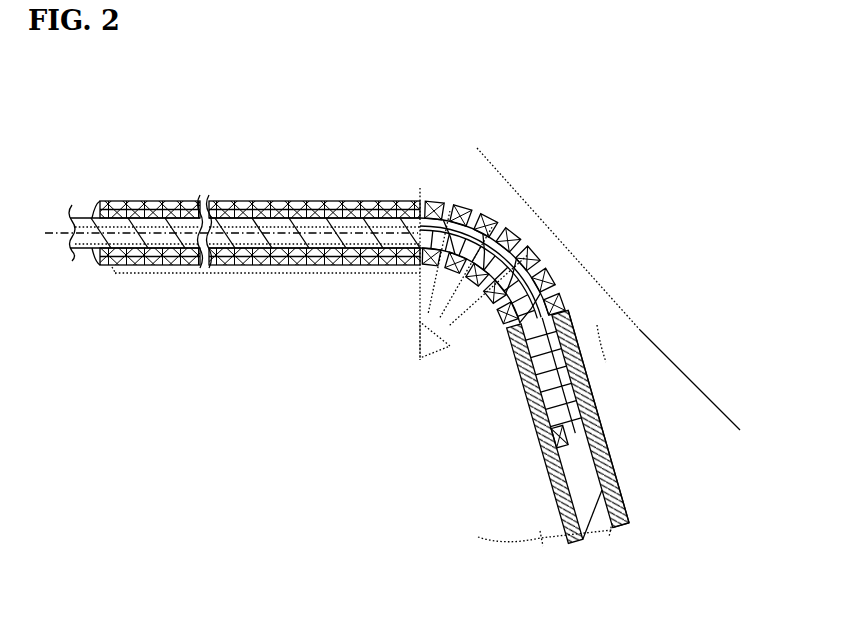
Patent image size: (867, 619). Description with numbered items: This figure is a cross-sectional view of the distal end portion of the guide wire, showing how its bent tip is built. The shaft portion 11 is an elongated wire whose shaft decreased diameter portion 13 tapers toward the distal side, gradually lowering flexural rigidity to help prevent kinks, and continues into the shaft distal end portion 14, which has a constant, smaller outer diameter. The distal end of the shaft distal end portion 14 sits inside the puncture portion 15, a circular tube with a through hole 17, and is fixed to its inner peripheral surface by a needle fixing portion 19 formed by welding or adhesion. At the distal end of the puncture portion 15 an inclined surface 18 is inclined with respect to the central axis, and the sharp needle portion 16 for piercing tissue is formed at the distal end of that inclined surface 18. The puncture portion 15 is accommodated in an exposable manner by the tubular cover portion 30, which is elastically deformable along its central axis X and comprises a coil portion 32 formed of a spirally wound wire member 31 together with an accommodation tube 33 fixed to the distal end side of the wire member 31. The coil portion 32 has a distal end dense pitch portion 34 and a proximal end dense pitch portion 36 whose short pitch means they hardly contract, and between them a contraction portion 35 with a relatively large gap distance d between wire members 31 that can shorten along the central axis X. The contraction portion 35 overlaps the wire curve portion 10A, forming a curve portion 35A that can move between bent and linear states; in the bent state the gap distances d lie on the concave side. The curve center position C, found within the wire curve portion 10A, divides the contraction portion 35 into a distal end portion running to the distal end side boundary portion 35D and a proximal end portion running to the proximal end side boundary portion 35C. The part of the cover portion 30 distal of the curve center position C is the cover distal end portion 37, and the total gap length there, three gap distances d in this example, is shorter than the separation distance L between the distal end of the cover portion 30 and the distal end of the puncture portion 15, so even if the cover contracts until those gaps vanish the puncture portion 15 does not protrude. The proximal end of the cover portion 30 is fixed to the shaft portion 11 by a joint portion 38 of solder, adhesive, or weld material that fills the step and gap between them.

The wire curve portion 10A is at (473, 205).
The shaft portion 11 is at (175, 212).
The shaft decreased diameter portion 13 is at (315, 218).
The shaft distal end portion 14 is at (592, 380).
The puncture portion 15 is at (551, 474).
The needle portion 16 is at (601, 528).
The through hole 17 is at (590, 446).
The inclined surface 18 is at (606, 507).
The needle fixing portion 19 is at (549, 437).
The cover portion 30 is at (228, 203).
The wire member 31 is at (355, 203).
The coil portion 32 is at (281, 203).
The accommodation tube 33 is at (616, 490).
The distal end dense pitch portion 34 is at (617, 343).
The contraction portion 35 is at (501, 251).
The curve portion 35A is at (548, 238).
The proximal end side boundary portion 35C is at (398, 288).
The distal end side boundary portion 35D is at (512, 372).
The proximal end dense pitch portion 36 is at (262, 274).
The cover distal end portion 37 is at (641, 334).
The joint portion 38 is at (100, 206).
The central axis X is at (81, 218).
The curve center position C is at (506, 218).
The separation distance L is at (537, 537).
The gap distance d is at (493, 243).